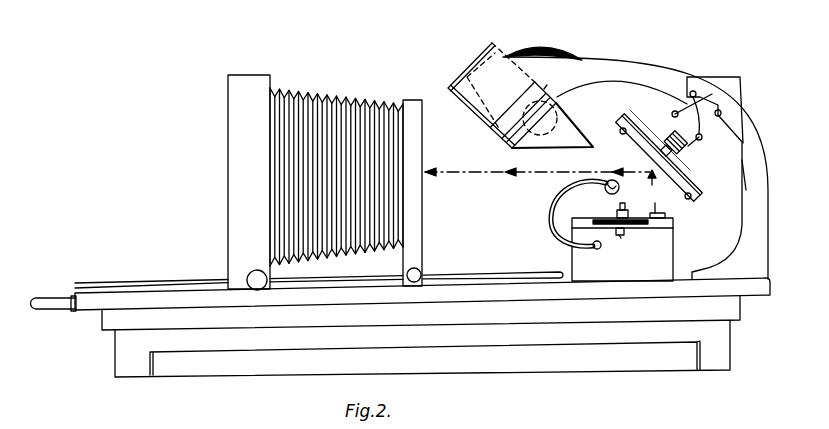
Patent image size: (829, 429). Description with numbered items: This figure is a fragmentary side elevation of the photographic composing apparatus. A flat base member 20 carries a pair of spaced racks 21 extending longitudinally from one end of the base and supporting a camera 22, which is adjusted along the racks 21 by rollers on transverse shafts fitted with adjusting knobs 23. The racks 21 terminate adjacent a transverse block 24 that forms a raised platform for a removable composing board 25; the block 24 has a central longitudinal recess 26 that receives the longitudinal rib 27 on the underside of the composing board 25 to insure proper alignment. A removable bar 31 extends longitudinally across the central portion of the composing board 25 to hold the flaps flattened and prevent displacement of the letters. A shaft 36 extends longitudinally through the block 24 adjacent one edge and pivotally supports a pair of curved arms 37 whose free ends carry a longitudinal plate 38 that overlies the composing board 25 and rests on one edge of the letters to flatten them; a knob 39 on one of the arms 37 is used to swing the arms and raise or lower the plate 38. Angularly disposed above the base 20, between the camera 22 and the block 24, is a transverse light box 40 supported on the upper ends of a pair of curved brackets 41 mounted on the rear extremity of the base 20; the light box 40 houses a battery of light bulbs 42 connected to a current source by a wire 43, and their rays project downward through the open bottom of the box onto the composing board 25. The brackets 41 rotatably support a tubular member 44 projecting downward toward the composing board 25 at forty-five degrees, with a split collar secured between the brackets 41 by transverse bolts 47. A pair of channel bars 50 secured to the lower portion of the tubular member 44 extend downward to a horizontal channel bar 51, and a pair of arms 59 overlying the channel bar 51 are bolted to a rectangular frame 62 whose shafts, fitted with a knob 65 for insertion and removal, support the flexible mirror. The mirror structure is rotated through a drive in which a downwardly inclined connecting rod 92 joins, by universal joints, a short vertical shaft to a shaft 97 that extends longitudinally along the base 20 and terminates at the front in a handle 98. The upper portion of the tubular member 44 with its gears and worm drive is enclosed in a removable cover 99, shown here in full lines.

The flat base member 20 is at (175, 272).
The racks 21 is at (98, 282).
The camera 22 is at (248, 82).
The adjusting knobs 23 is at (247, 280).
The transverse block 24 is at (673, 248).
The composing board 25 is at (597, 218).
The longitudinal recess 26 is at (623, 233).
The longitudinal rib 27 is at (617, 234).
The removable bar 31 is at (628, 210).
The shaft 36 is at (597, 250).
The curved arms 37 is at (556, 215).
The longitudinal plate 38 is at (663, 192).
The knob 39 is at (605, 186).
The light box 40 is at (520, 95).
The curved brackets 41 is at (645, 73).
The light bulbs 42 is at (507, 54).
The wire 43 is at (553, 50).
The tubular member 44 is at (672, 113).
The transverse bolts 47 is at (681, 112).
The channel bars 50 is at (687, 148).
The horizontal channel bar 51 is at (703, 140).
The arms 59 is at (656, 117).
The rectangular frame 62 is at (643, 143).
The knob 65 is at (620, 132).
The connecting rod 92 is at (740, 186).
The shaft 97 is at (72, 312).
The handle 98 is at (50, 309).
The removable cover 99 is at (723, 77).